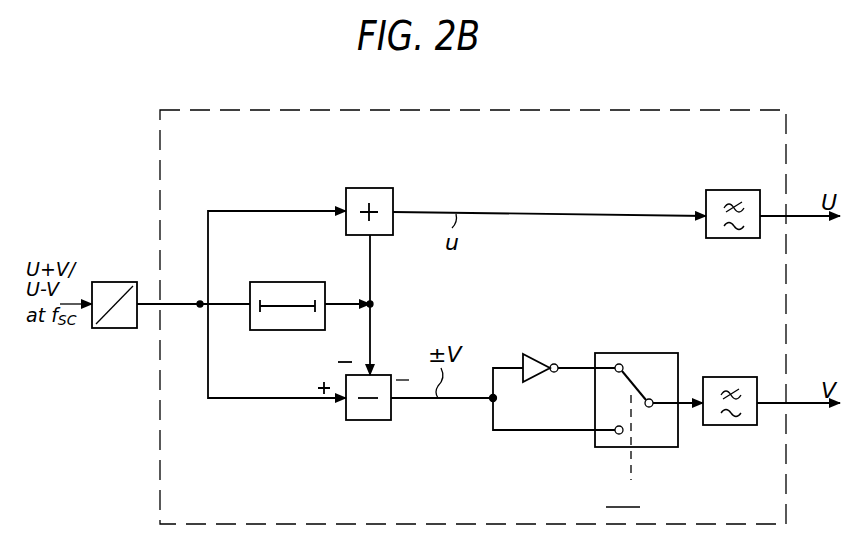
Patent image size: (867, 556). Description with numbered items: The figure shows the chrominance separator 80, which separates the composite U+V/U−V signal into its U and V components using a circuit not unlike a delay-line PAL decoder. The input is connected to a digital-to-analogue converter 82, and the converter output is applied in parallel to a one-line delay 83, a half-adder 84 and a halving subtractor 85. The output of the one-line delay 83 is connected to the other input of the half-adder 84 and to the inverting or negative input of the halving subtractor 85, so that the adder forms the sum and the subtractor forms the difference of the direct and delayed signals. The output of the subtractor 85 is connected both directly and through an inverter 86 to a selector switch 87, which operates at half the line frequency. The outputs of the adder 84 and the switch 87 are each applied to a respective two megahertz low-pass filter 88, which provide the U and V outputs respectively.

The chrominance separator 80 is at (473, 302).
The digital-to-analogue converter 82 is at (115, 328).
The one-line delay 83 is at (273, 330).
The half-adder 84 is at (359, 188).
The halving subtractor 85 is at (366, 420).
The inverter 86 is at (537, 353).
The selector switch 87 is at (634, 353).
The 2 MHz low-pass filter 88 is at (728, 190).